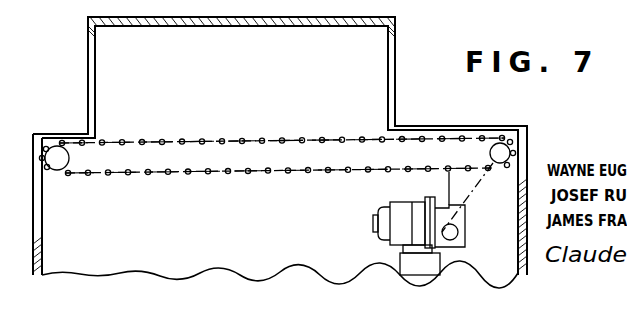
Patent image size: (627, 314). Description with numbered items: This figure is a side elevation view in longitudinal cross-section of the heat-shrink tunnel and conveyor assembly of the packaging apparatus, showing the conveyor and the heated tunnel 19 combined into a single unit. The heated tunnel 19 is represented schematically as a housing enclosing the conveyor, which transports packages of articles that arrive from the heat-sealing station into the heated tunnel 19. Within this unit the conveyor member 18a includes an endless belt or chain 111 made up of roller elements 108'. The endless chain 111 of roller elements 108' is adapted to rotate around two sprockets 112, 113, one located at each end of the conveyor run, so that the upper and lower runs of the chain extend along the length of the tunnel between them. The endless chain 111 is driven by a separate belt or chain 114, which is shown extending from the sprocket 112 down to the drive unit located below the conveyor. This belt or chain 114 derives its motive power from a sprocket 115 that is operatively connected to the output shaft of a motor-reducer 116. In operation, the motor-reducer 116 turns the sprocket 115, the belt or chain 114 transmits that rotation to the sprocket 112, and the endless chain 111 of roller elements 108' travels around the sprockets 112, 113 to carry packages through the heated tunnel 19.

The conveyor member 18a is at (397, 135).
The heated tunnel 19 is at (246, 79).
The roller elements 108' is at (281, 142).
The endless belt or chain 111 is at (337, 134).
The sprocket 112 is at (508, 147).
The sprocket 113 is at (52, 146).
The belt or chain 114 is at (495, 180).
The sprocket 115 is at (462, 237).
The motor-reducer 116 is at (453, 172).